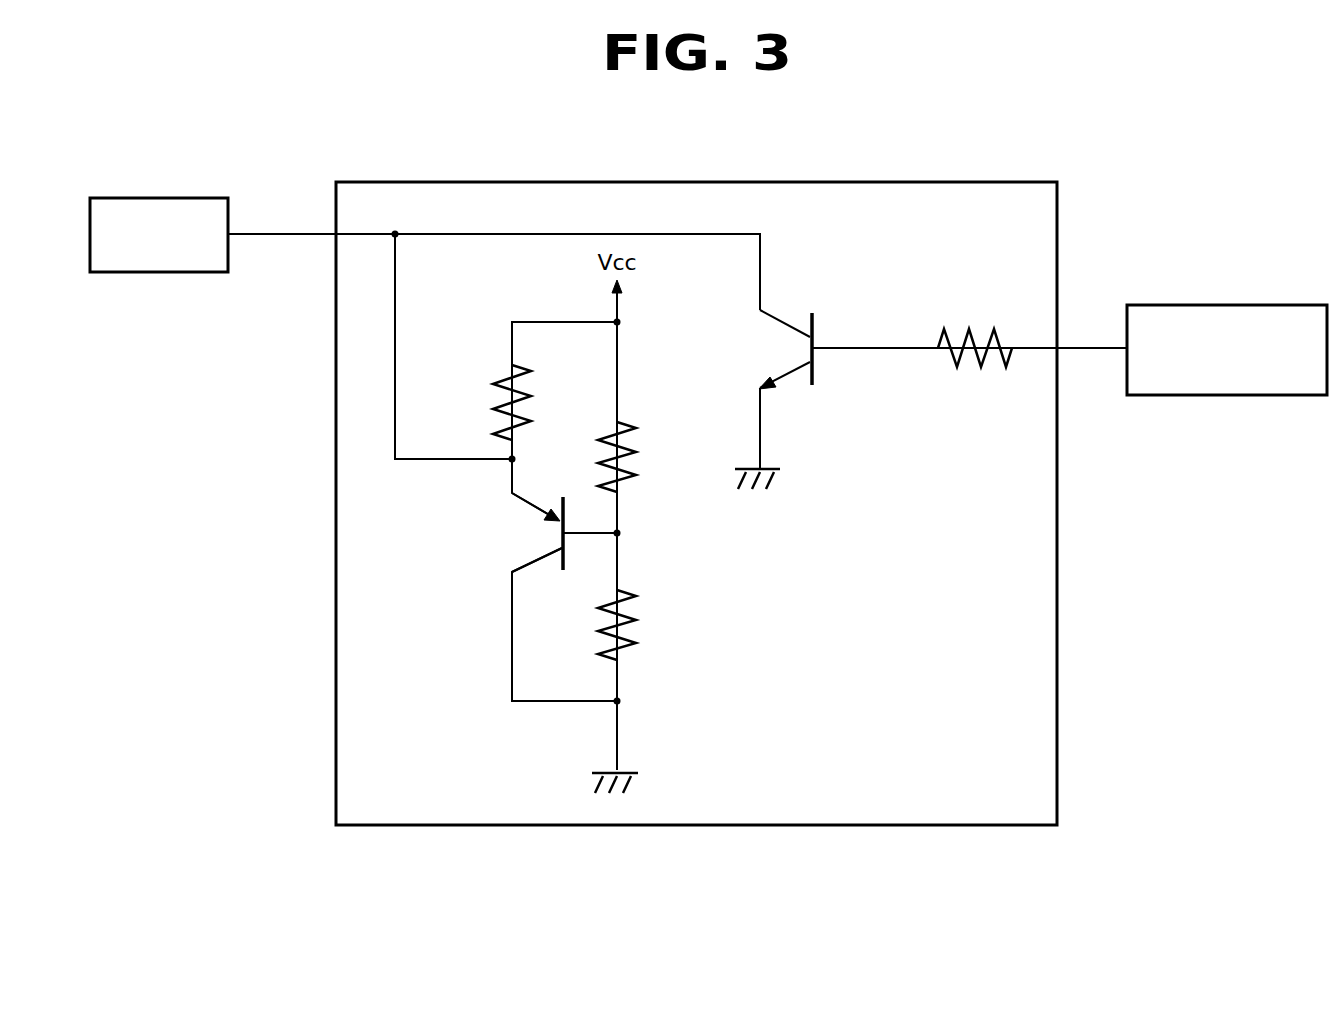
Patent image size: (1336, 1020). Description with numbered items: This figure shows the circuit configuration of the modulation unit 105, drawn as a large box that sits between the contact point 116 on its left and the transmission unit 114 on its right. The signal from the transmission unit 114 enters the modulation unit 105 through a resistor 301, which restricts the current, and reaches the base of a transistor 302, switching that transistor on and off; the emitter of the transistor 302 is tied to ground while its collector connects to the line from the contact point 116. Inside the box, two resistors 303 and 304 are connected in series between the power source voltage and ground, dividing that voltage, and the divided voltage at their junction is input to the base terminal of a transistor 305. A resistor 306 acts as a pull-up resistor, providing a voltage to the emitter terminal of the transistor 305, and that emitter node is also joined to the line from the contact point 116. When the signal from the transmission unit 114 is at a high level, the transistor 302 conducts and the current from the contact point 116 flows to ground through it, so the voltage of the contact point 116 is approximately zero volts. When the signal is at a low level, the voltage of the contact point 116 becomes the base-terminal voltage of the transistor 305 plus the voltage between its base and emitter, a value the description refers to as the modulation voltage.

The modulation unit 105 is at (912, 181).
The contact point 116 is at (160, 197).
The transmission unit 114 is at (1262, 304).
The resistor 301 is at (975, 324).
The transistor 302 is at (760, 343).
The resistor 303 is at (642, 462).
The resistor 304 is at (642, 633).
The transistor 305 is at (506, 530).
The pull-up resistor 306 is at (490, 398).